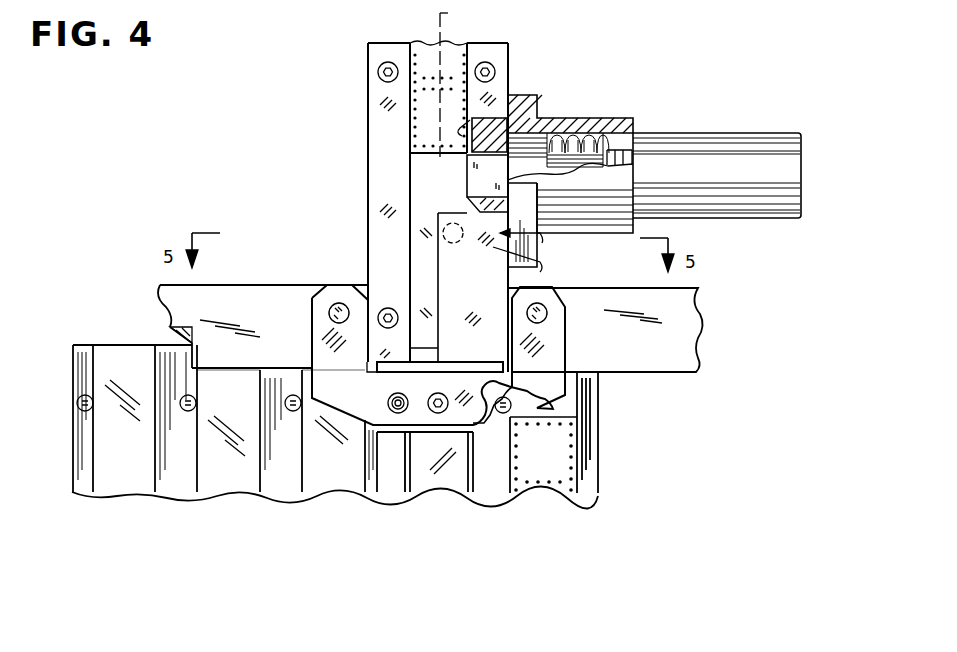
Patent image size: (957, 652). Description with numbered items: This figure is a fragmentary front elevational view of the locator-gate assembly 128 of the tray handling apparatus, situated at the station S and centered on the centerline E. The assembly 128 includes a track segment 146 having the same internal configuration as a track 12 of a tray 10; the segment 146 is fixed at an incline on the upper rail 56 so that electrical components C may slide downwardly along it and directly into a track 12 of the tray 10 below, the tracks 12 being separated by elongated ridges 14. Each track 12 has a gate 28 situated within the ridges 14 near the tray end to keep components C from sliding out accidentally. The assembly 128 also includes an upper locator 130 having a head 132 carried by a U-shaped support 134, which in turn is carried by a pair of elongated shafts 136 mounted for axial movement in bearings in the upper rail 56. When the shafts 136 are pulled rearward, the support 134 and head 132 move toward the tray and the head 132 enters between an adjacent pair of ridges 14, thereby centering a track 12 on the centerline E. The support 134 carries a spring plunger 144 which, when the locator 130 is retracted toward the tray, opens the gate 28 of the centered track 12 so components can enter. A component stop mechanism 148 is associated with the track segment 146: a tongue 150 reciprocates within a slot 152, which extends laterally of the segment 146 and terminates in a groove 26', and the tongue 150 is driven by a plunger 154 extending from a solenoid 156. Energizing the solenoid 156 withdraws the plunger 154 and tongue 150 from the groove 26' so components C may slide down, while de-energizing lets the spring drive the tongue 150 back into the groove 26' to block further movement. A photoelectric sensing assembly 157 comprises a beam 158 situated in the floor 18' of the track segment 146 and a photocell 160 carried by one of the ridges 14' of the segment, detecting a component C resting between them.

The tray 10 is at (335, 455).
The track 12 is at (223, 482).
The ridge 14 is at (335, 451).
The ridge of the track segment 14' is at (471, 198).
The floor of the track segment 18' is at (291, 307).
The groove in the track segment 26' is at (445, 152).
The gate 28 is at (196, 399).
The upper rail 56 is at (692, 335).
The locator-gate assembly 128 is at (675, 162).
The upper locator 130 is at (391, 456).
The head 132 is at (434, 435).
The support 134 is at (557, 385).
The shaft 136 is at (328, 314).
The spring plunger 144 is at (392, 399).
The track segment 146 is at (361, 107).
The component stop mechanism 148 is at (652, 120).
The tongue 150 is at (507, 170).
The slot 152 is at (470, 186).
The plunger 154 is at (579, 157).
The solenoid 156 is at (775, 148).
The photoelectric sensing assembly 157 is at (542, 243).
The beam 158 is at (464, 238).
The photocell 160 is at (540, 270).
The electrical component C is at (410, 127).
The centerline E is at (440, 17).
The station S is at (313, 187).